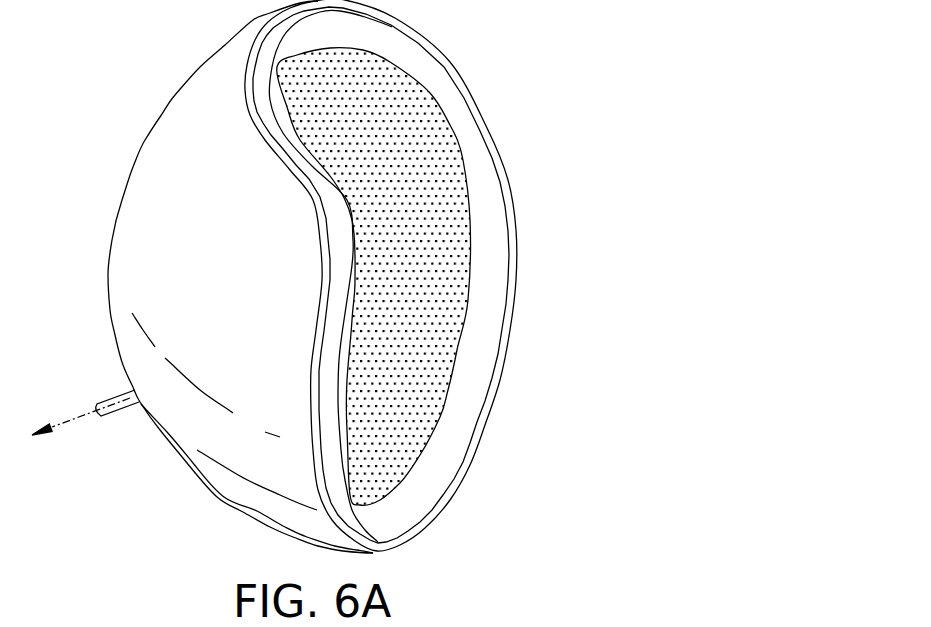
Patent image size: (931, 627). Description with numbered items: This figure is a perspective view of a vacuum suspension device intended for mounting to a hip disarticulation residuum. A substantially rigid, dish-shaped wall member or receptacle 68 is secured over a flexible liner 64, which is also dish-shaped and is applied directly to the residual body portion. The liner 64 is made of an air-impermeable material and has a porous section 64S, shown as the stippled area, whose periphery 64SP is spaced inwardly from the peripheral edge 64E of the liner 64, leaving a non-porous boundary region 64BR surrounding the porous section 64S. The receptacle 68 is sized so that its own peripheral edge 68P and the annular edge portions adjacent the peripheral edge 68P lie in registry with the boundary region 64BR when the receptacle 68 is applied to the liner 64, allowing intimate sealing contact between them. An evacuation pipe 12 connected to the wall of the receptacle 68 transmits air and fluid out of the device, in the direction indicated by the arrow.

The evacuation pipe 12 is at (105, 402).
The flexible liner 64 is at (425, 282).
The peripheral edge of the liner 64E is at (518, 210).
The non-porous boundary region 64BR is at (487, 121).
The periphery of the porous section 64SP is at (465, 313).
The porous section 64S is at (422, 407).
The receptacle 68 is at (193, 453).
The peripheral edge of the receptacle 68P is at (316, 507).